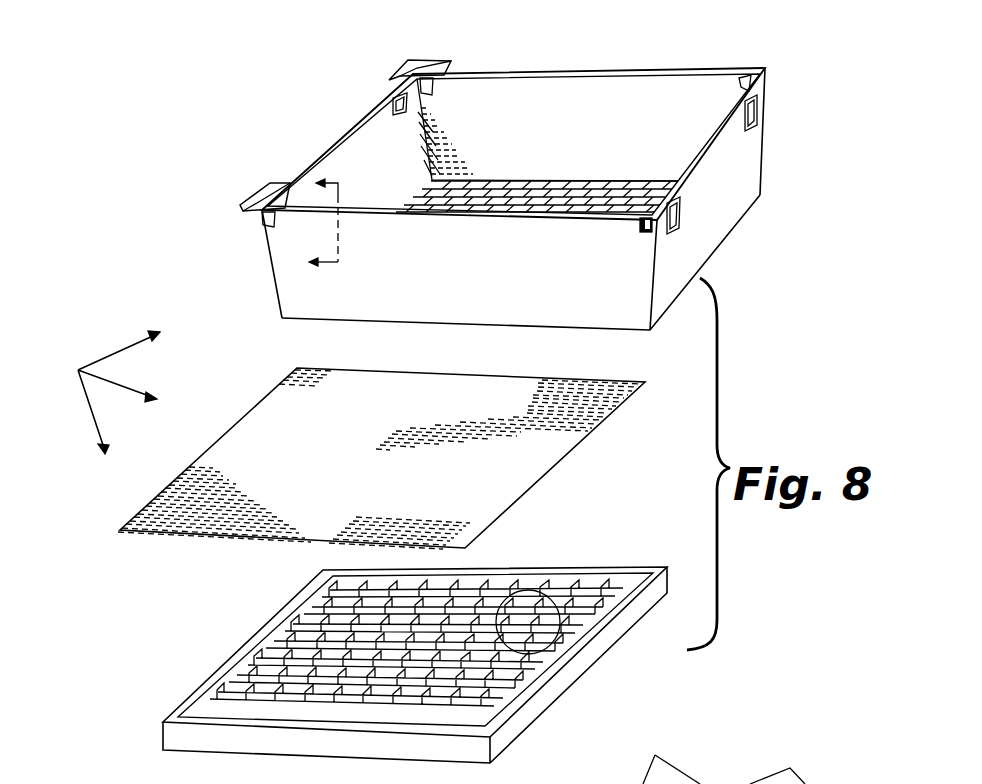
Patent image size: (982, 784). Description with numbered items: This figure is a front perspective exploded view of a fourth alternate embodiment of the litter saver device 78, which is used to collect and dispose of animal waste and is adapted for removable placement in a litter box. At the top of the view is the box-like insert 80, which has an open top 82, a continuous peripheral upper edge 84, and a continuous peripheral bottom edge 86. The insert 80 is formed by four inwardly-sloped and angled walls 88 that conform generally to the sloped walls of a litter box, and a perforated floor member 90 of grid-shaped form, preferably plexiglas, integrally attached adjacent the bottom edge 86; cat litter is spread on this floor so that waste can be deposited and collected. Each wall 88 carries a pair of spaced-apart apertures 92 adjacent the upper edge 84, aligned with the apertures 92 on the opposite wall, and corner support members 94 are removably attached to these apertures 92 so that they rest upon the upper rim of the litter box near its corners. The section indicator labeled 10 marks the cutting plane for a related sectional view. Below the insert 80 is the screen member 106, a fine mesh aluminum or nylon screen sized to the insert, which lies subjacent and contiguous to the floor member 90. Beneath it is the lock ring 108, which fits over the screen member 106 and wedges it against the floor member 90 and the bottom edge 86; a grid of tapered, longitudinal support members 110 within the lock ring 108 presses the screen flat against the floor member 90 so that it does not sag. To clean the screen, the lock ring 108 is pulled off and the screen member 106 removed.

The section line for FIG. 10 is at (320, 222).
The litter saver device 78 is at (102, 392).
The box-like insert 80 is at (772, 109).
The open top 82 is at (501, 102).
The peripheral upper edge 84 is at (338, 132).
The peripheral bottom edge 86 is at (720, 240).
The inwardly-sloped and angled walls 88 is at (598, 122).
The perforated floor member 90 is at (546, 183).
The apertures 92 is at (738, 80).
The corner support members 94 is at (395, 64).
The screen member 106 is at (508, 498).
The lock ring 108 is at (605, 662).
The tapered longitudinal support members 110 is at (560, 592).